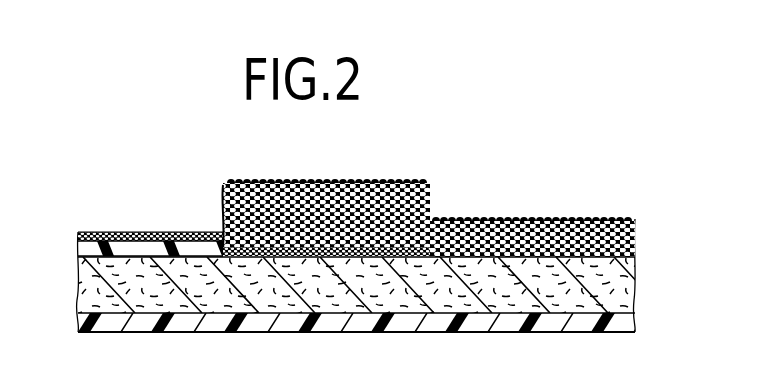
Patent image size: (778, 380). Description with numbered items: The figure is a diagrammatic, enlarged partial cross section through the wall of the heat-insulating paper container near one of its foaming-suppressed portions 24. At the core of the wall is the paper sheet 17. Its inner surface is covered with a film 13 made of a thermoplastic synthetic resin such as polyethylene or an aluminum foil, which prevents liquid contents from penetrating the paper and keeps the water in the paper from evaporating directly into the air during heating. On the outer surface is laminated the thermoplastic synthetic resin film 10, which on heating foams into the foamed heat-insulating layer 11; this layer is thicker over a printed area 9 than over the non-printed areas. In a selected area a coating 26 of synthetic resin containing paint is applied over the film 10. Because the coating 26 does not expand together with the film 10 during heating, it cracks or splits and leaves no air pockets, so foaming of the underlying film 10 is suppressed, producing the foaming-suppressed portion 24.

The thermoplastic synthetic resin film 10 is at (78, 248).
The coating 26 is at (112, 233).
The foaming-suppressed portion 24 is at (177, 230).
The foamed heat-insulating layer 11 is at (382, 174).
The printed area 9 is at (420, 185).
The paper sheet 17 is at (630, 272).
The film 13 is at (627, 320).